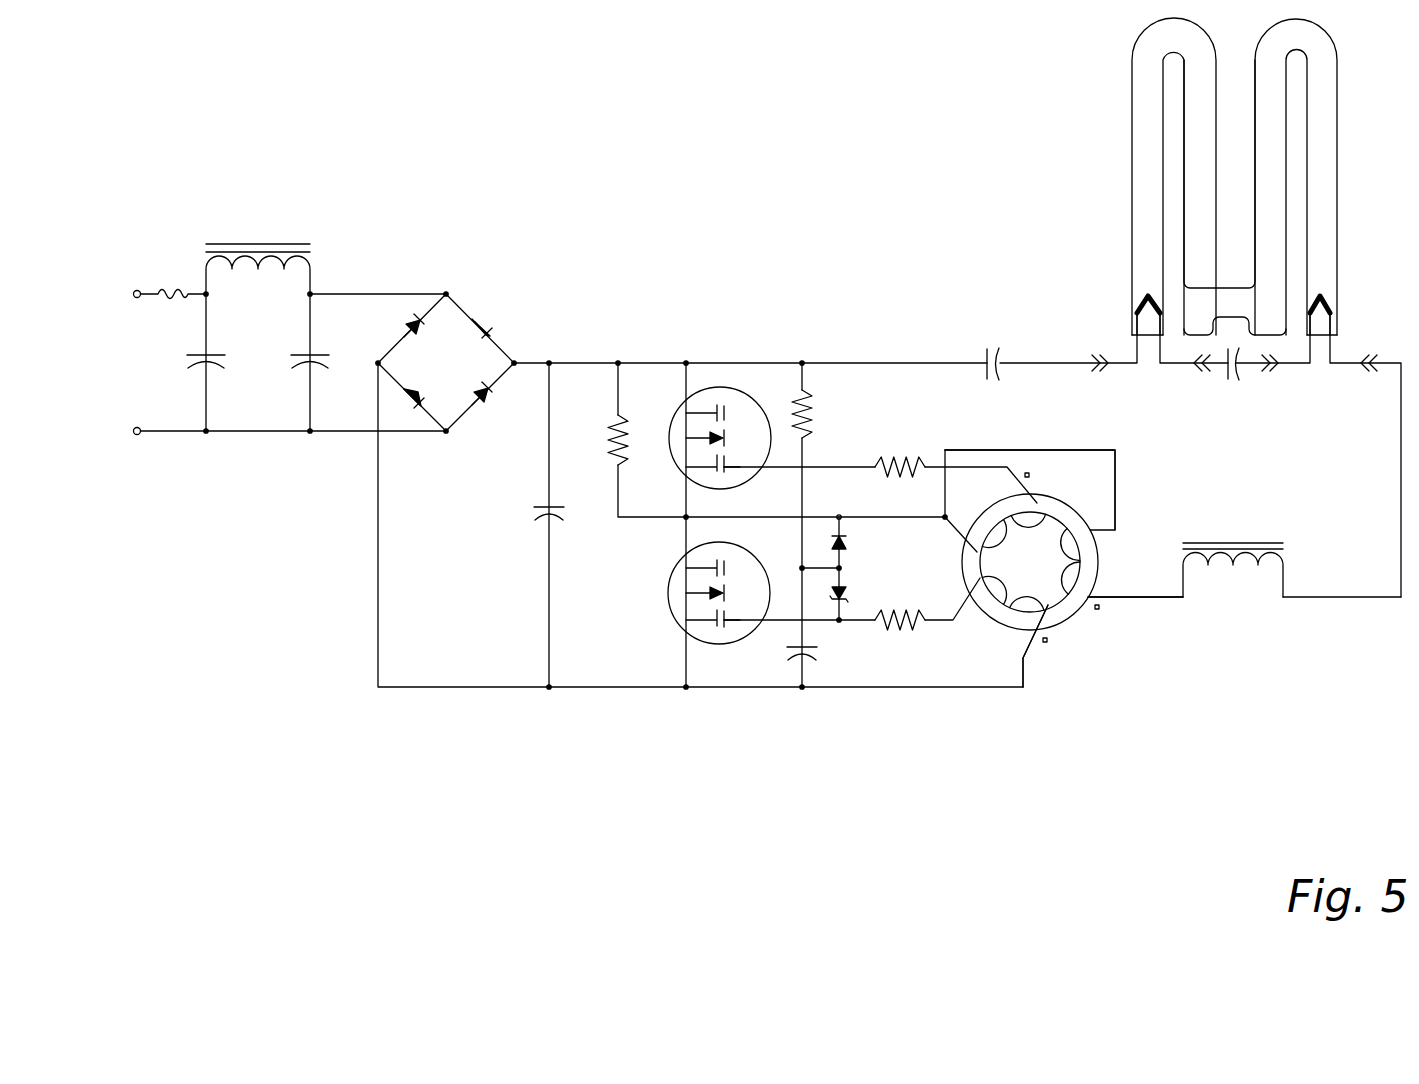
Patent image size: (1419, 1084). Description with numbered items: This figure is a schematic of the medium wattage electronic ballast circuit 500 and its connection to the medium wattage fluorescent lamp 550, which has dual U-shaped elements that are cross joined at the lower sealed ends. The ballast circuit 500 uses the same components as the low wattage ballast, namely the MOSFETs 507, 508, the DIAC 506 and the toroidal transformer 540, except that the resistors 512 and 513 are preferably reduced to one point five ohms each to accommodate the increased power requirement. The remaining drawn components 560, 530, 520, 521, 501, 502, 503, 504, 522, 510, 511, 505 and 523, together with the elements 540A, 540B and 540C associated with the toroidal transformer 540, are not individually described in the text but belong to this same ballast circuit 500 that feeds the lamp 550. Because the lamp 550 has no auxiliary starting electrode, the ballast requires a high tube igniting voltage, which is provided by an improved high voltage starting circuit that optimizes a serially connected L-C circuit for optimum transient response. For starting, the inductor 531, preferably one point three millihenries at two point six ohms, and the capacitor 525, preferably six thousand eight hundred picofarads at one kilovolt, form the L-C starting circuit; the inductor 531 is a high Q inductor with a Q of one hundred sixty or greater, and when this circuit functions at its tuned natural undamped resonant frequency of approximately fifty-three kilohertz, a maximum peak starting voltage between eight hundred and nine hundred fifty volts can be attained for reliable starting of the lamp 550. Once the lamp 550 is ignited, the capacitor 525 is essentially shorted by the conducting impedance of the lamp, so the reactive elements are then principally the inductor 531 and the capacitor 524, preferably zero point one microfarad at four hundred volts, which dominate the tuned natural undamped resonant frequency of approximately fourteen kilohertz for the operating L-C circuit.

The medium wattage ballast circuit 500 is at (320, 138).
The fuse 560 is at (174, 312).
The inductor 530 is at (258, 276).
The capacitor 520 is at (220, 379).
The capacitor 521 is at (324, 379).
The diode 501 is at (391, 321).
The diode 502 is at (503, 321).
The diode 503 is at (499, 405).
The diode 504 is at (414, 424).
The capacitor 522 is at (528, 531).
The resistor 510 is at (595, 440).
The resistor 511 is at (826, 414).
The MOSFET 507 is at (720, 451).
The MOSFET 508 is at (719, 607).
The diode 505 is at (864, 542).
The DIAC 506 is at (863, 594).
The capacitor 523 is at (821, 664).
The resistor 512 is at (900, 479).
The resistor 513 is at (900, 633).
The toroidal transformer 540 is at (1028, 562).
The triac terminal 540A is at (1135, 572).
The triac terminal 540B is at (1030, 490).
The triac gate 540C is at (1001, 646).
The capacitor 524 is at (989, 348).
The capacitor 525 is at (1234, 380).
The inductor 531 is at (1233, 571).
The medium wattage fluorescent lamp 550 is at (1205, 176).